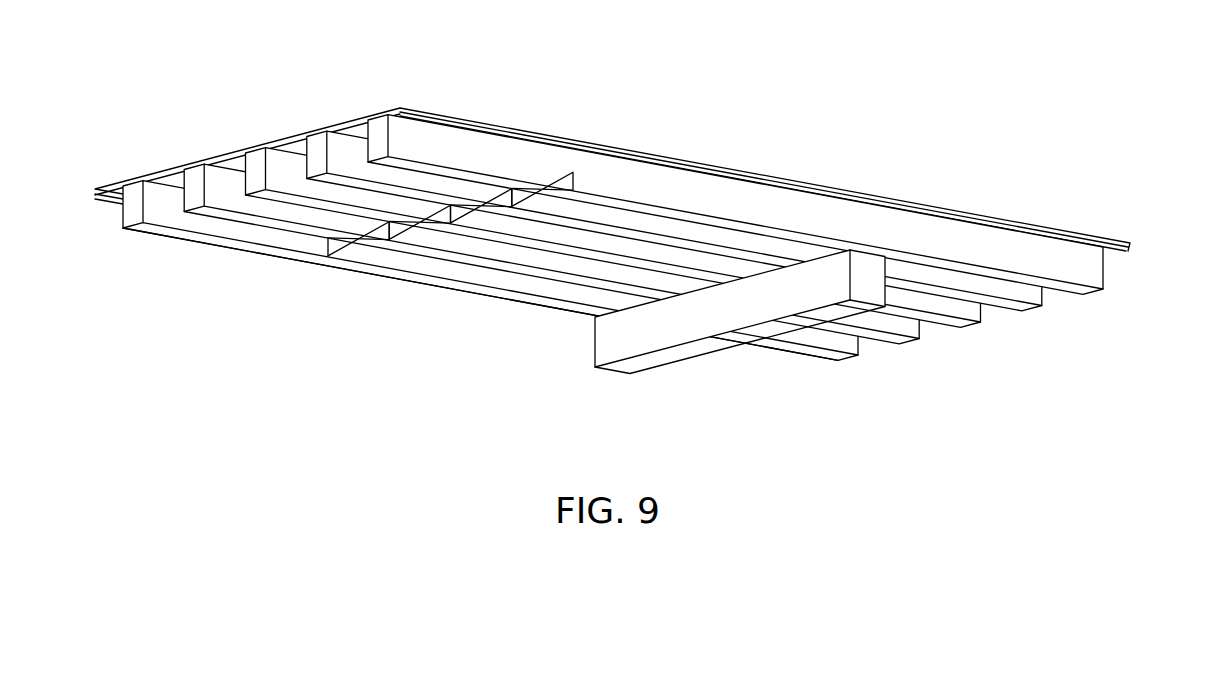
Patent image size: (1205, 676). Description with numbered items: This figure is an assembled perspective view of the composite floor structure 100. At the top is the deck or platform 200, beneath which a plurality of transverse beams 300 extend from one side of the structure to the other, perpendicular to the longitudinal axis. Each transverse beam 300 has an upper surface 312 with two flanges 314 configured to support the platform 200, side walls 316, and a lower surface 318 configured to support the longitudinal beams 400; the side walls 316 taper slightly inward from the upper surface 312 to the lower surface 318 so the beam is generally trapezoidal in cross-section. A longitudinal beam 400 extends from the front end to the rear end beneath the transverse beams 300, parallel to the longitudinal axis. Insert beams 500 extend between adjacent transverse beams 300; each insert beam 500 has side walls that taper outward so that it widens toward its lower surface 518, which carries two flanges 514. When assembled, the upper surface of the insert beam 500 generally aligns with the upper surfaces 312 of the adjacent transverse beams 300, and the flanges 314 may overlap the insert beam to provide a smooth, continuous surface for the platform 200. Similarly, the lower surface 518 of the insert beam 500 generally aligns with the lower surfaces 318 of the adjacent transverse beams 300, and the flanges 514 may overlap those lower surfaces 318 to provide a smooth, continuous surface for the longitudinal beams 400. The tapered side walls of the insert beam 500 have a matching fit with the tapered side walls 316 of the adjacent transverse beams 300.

The composite floor structure 100 is at (621, 207).
The platform 200 is at (927, 113).
The transverse beam 300 is at (621, 221).
The upper surface 312 is at (254, 136).
The flange 314 is at (298, 135).
The side wall 316 is at (473, 271).
The lower surface 318 is at (181, 238).
The longitudinal beam 400 is at (615, 335).
The insert beam 500 is at (410, 258).
The flange 514 is at (323, 250).
The lower surface 518 is at (350, 258).